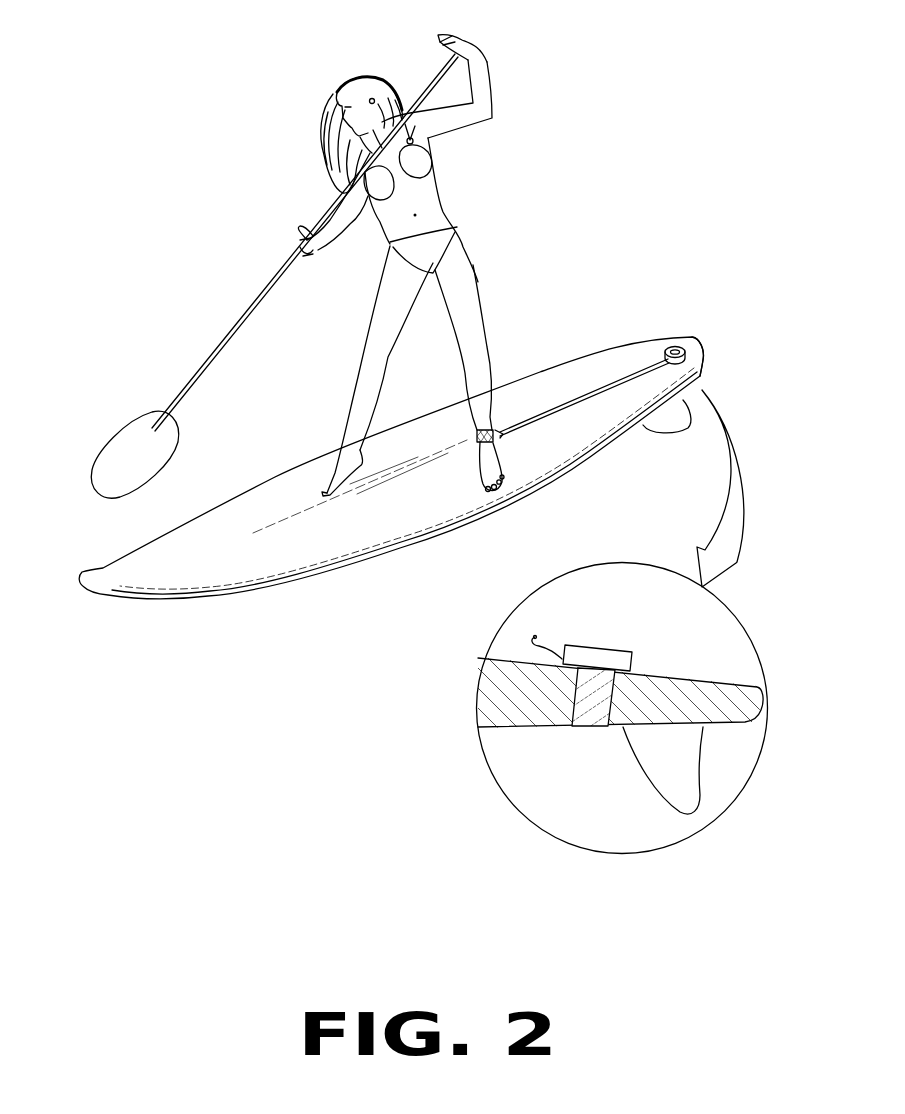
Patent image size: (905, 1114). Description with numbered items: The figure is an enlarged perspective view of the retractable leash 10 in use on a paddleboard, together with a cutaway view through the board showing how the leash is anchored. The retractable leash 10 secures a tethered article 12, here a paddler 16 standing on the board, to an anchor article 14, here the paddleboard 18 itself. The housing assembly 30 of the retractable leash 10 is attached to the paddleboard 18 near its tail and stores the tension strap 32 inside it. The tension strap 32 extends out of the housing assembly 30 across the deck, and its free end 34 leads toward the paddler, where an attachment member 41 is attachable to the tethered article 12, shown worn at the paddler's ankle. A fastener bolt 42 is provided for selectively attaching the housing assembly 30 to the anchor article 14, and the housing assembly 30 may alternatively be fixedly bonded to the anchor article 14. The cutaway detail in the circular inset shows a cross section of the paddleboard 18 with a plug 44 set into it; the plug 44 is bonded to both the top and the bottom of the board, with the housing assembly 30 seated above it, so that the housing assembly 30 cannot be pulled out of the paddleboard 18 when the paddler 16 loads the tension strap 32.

The retractable leash 10 is at (612, 300).
The tethered article 12 is at (320, 85).
The anchor article 14 is at (357, 579).
The paddler 16 is at (433, 203).
The paddleboard 18 is at (203, 583).
The housing assembly 30 is at (678, 332).
The tension strap 32 is at (563, 400).
The free end of tension strap 34 is at (500, 431).
The attachment member 41 is at (500, 438).
The fastener bolt 42 is at (706, 357).
The plug 44 is at (592, 728).